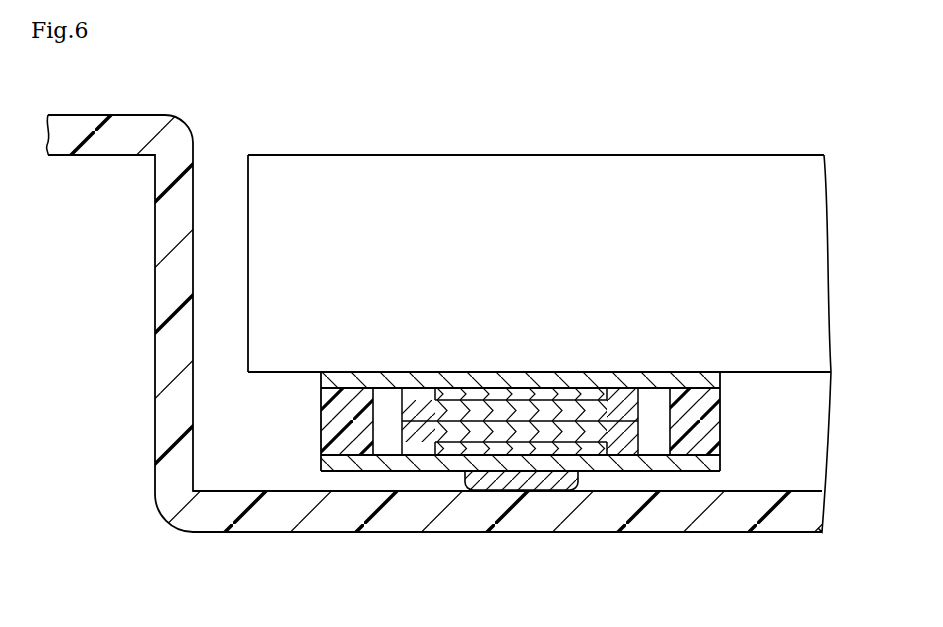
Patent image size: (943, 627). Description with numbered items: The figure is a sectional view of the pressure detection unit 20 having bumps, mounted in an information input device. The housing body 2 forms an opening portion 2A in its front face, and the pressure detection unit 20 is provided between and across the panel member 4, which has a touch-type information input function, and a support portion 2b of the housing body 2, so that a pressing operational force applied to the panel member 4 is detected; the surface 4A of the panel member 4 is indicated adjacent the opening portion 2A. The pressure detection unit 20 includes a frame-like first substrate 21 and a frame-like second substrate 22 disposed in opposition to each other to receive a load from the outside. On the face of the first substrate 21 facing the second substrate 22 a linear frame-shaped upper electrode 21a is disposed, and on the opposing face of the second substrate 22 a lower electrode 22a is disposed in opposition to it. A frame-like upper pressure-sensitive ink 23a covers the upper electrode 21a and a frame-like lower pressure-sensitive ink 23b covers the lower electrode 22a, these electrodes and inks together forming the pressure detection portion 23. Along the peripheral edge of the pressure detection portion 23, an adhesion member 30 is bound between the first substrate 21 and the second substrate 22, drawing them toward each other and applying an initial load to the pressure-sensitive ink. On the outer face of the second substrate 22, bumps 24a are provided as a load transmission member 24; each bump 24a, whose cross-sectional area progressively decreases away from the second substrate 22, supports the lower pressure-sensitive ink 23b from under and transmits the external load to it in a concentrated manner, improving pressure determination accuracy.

The housing body 2 is at (440, 294).
The opening portion 2A is at (217, 160).
The support portion 2b is at (280, 491).
The panel member 4 is at (539, 210).
The top surface of cover plate 4A is at (458, 155).
The pressure detection unit 20 is at (487, 460).
The first substrate 21 is at (494, 380).
The upper electrode 21a is at (552, 392).
The second substrate 22 is at (362, 470).
The lower electrode 22a is at (585, 463).
The pressure detection portion 23 is at (491, 444).
The upper pressure-sensitive ink 23a is at (415, 392).
The lower pressure-sensitive ink 23b is at (430, 458).
The load transmission member 24 is at (532, 543).
The bump 24a is at (542, 490).
The adhesion member 30 is at (325, 435).